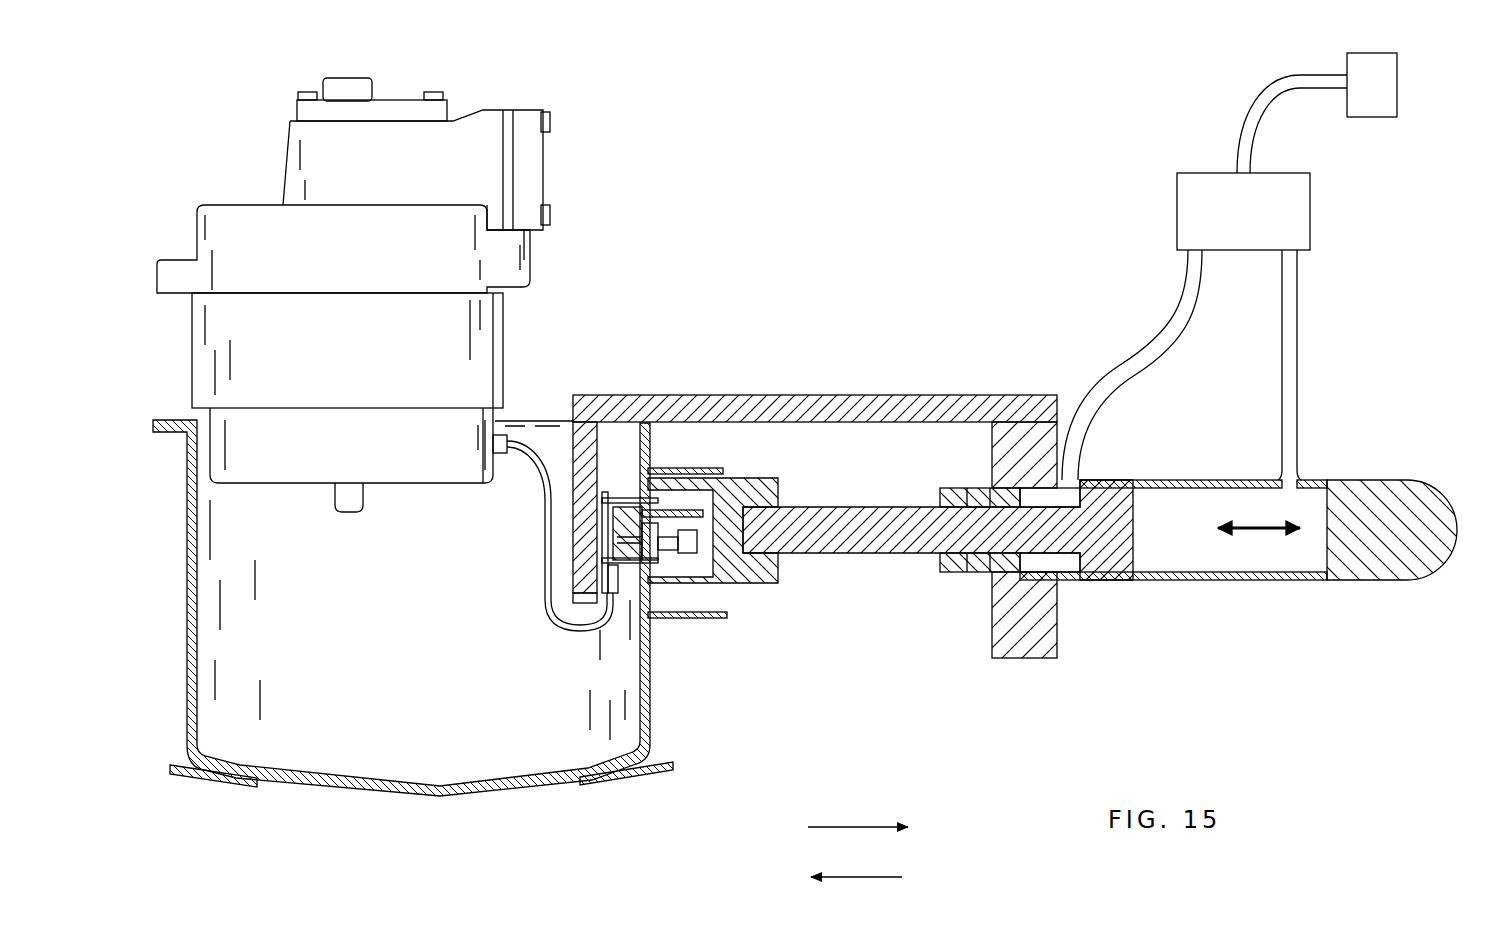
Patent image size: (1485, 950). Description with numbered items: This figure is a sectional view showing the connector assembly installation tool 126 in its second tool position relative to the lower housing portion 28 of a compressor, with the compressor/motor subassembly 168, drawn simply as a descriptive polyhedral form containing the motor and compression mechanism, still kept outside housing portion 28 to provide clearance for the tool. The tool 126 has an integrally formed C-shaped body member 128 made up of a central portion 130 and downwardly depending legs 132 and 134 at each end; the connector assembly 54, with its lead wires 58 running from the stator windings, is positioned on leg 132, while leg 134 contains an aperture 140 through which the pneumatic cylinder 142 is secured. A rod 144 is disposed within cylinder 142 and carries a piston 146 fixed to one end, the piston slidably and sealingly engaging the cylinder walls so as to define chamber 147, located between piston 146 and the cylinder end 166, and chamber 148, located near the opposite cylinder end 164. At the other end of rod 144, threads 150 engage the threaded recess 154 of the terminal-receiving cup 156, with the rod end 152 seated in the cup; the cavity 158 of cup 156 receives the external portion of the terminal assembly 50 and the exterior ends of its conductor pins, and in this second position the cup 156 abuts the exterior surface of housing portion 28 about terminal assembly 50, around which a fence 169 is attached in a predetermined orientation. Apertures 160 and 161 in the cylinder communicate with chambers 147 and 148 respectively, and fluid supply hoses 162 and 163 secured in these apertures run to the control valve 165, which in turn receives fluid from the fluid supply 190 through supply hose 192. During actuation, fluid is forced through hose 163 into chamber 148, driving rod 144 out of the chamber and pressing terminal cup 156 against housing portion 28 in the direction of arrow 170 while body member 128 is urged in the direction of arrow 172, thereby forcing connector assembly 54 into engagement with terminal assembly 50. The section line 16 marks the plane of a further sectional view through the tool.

The section line 16- 16 is at (920, 357).
The lower housing portion 28 is at (465, 800).
The terminal assembly 50 is at (664, 565).
The connector assembly 54 is at (623, 598).
The lead wires 58 is at (565, 620).
The connector assembly installation tool 126 is at (1074, 366).
The C-shaped body member 128 is at (756, 390).
The central portion 130 is at (958, 398).
The leg 132 is at (573, 440).
The leg 134 is at (1022, 660).
The aperture 140 is at (990, 497).
The pneumatic cylinder 142 is at (1237, 472).
The rod 144 is at (917, 555).
The piston 146 is at (1133, 548).
The chamber 147 is at (1047, 566).
The chamber 148 is at (1260, 553).
The threads 150 is at (760, 506).
The shaft end 152 is at (773, 505).
The threaded recess 154 is at (802, 506).
The terminal-receiving cup 156 is at (786, 591).
The cavity 158 is at (697, 560).
The aperture 160 is at (1082, 482).
The aperture 161 is at (1298, 480).
The fluid supply hose 162 is at (1178, 337).
The fluid supply hose 163 is at (1297, 353).
The end of cylinder 164 is at (1460, 527).
The control valve 165 is at (1172, 206).
The end of cylinder 166 is at (940, 500).
The compressor/motor subassembly 168 is at (585, 172).
The fence 169 is at (665, 619).
The arrow 170 is at (838, 827).
The arrow 172 is at (868, 877).
The fluid supply 190 is at (1381, 122).
The supply hose 192 is at (1302, 90).